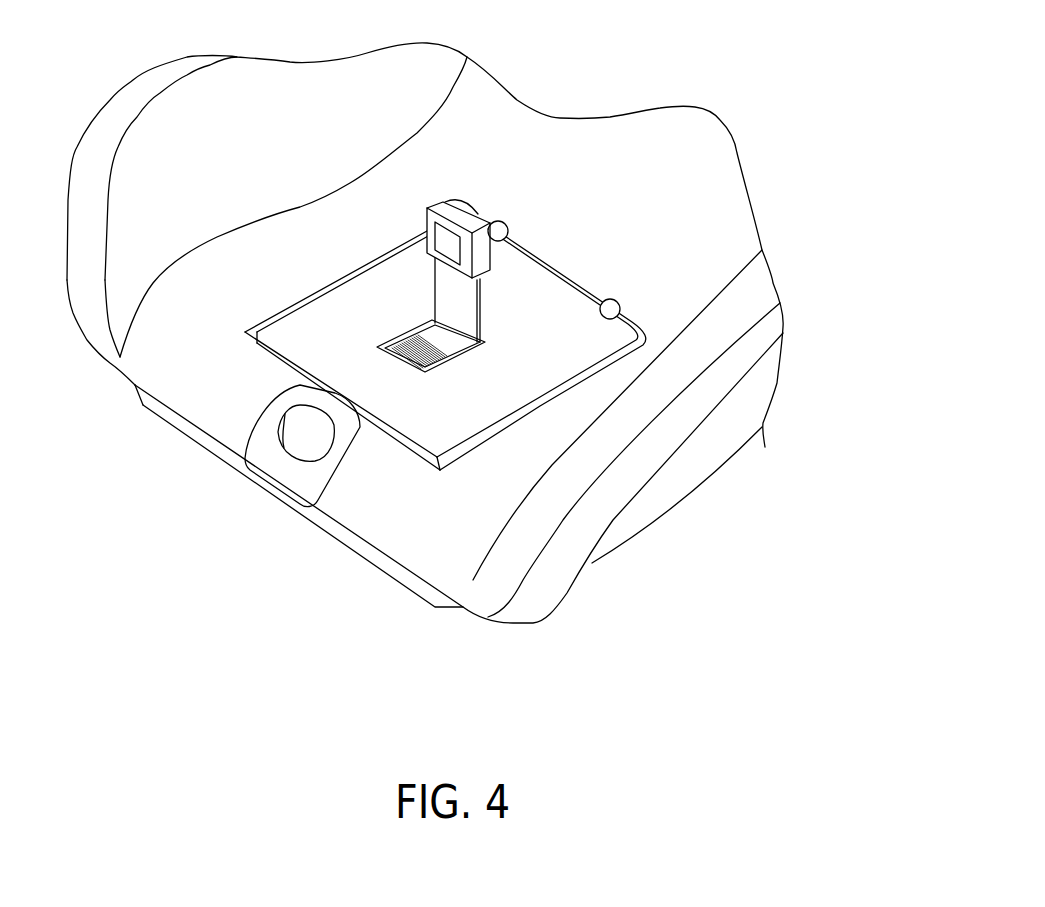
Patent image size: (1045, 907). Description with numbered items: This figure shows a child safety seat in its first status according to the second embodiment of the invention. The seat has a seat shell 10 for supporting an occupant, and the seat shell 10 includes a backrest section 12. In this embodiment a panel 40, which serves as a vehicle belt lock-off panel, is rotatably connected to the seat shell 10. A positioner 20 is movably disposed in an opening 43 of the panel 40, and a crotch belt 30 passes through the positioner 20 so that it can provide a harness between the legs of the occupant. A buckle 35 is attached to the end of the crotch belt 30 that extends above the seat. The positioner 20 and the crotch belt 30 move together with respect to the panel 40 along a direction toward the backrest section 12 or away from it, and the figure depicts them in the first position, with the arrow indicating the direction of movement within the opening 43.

The seat shell 10 is at (563, 413).
The backrest section 12 is at (665, 140).
The positioner 20 is at (445, 350).
The crotch belt 30 is at (450, 297).
The buckle 35 is at (440, 208).
The panel 40 is at (477, 400).
The opening 43 is at (366, 333).